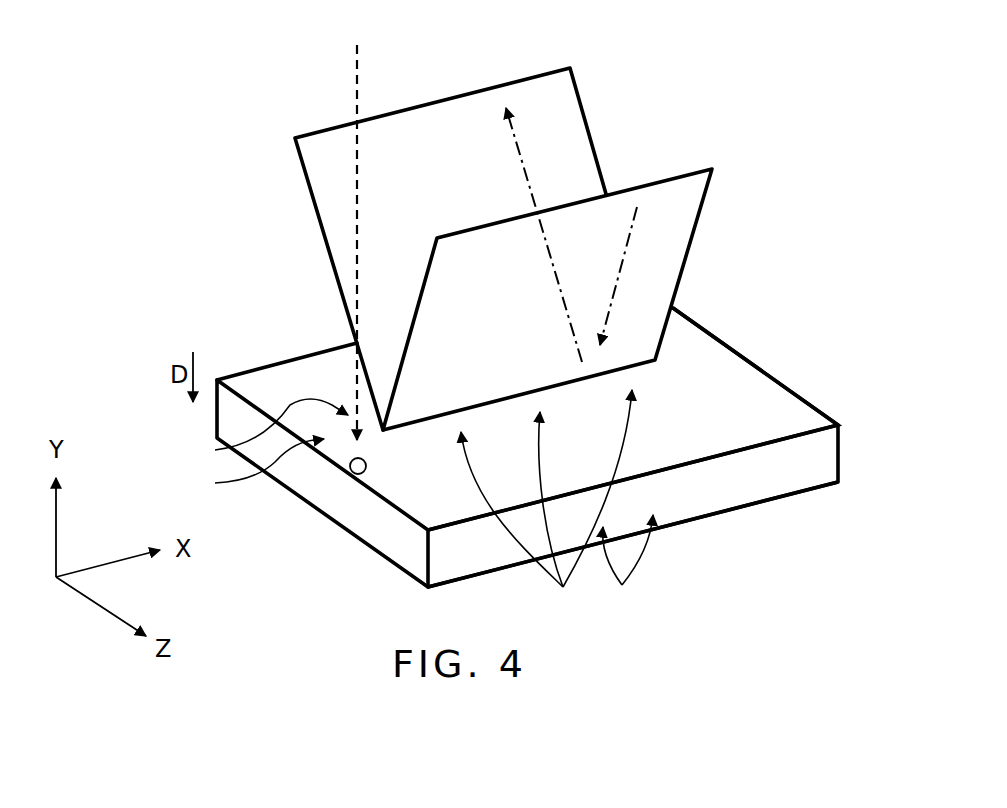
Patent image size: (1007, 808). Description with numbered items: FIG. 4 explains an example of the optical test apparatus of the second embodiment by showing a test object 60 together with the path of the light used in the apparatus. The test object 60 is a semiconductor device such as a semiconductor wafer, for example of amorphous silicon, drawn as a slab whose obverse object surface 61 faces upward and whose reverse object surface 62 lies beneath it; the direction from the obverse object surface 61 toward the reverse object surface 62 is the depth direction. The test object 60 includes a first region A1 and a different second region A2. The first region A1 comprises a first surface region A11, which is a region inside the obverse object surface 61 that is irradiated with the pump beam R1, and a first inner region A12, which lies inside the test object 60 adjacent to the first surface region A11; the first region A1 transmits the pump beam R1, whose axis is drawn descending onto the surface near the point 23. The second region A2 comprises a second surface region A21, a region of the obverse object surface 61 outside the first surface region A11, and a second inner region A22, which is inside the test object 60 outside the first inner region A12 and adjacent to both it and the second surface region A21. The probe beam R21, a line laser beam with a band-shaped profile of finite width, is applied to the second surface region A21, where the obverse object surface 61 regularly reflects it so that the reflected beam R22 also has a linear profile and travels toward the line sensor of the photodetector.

The test object 60 is at (840, 453).
The obverse object surface 61 is at (763, 402).
The reverse object surface 62 is at (802, 493).
The reference point / hinge point 23 is at (363, 474).
The pump beam R1 is at (358, 64).
The probe beam R21 is at (628, 247).
The reflected beam R22 is at (513, 137).
The first region A1 is at (172, 435).
The first surface region A11 is at (249, 468).
The first inner region A12 is at (260, 431).
The second region A2 is at (645, 620).
The second surface region A21 is at (546, 505).
The second inner region A22 is at (628, 568).